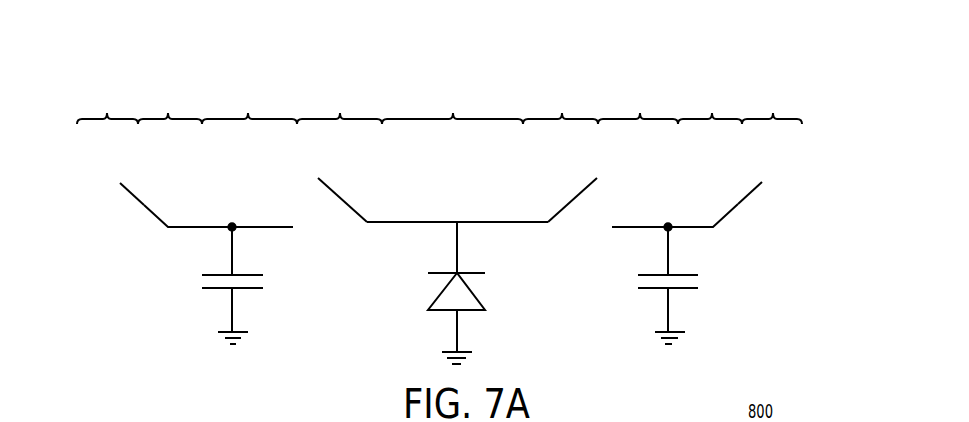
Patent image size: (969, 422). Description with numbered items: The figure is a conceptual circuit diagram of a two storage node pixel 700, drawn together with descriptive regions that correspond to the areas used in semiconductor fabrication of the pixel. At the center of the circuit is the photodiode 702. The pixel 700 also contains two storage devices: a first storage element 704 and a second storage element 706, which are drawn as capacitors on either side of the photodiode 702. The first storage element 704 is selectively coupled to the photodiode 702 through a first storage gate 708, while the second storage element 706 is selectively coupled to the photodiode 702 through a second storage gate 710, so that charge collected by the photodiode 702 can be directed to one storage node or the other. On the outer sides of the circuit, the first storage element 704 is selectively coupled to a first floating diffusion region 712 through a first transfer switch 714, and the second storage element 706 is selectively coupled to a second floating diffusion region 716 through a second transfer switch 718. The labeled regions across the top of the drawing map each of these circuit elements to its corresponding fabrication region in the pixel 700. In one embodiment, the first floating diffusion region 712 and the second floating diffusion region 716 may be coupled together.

The pixel 700 is at (700, 62).
The photodiode 702 is at (482, 298).
The first storage device/element 704 is at (640, 282).
The second storage device/element 706 is at (260, 282).
The first storage gate 708 is at (568, 205).
The second storage gate 710 is at (350, 203).
The first floating diffusion region 712 is at (785, 170).
The first transfer switch 714 is at (737, 203).
The second floating diffusion region 716 is at (108, 175).
The second transfer switch 718 is at (150, 205).